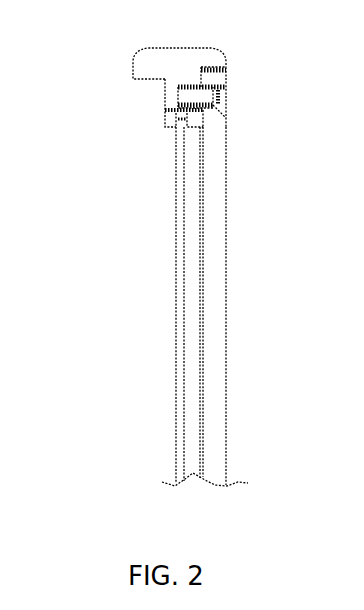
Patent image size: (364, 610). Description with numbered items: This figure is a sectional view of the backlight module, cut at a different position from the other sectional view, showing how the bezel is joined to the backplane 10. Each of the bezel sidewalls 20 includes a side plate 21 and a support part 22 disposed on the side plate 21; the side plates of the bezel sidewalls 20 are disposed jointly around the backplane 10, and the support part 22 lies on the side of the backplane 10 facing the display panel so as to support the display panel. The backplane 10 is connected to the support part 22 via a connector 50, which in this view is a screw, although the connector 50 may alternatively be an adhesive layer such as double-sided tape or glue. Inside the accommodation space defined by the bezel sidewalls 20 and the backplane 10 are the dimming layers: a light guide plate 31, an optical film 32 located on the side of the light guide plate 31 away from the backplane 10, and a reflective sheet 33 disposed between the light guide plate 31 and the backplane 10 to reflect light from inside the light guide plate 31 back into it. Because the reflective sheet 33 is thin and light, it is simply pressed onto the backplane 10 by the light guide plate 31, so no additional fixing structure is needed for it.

The backplane 10 is at (212, 378).
The bezel sidewalls 20 is at (85, 32).
The side plate 21 is at (168, 57).
The support part 22 is at (167, 110).
The light guide plate 31 is at (195, 185).
The optical film 32 is at (182, 330).
The reflective sheet 33 is at (202, 267).
The connector 50 is at (223, 78).